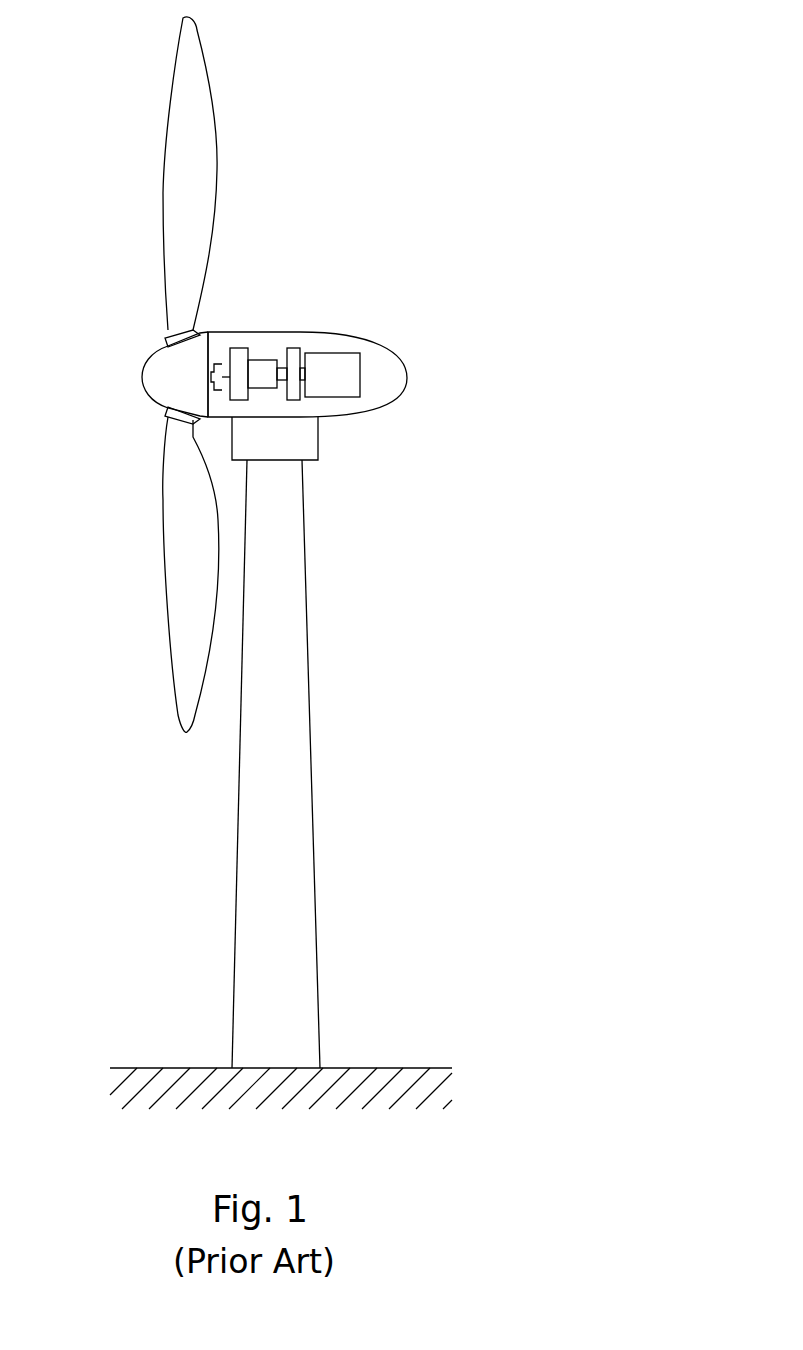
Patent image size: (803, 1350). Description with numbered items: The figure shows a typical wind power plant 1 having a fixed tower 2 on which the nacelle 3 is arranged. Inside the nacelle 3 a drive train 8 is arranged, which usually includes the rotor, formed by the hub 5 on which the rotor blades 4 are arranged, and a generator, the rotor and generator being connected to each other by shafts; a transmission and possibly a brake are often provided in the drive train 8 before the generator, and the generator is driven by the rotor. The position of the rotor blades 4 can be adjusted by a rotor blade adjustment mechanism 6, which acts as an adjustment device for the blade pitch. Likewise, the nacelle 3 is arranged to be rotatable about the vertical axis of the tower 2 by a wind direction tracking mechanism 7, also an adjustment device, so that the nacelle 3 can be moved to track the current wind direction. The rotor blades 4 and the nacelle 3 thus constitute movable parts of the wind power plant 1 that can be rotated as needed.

The wind power plant 1 is at (445, 268).
The tower 2 is at (282, 940).
The nacelle 3 is at (407, 378).
The rotor blades 4 is at (193, 208).
The hub 5 is at (188, 372).
The rotor blade adjustment mechanism 6 is at (165, 337).
The wind direction tracking mechanism 7 is at (320, 440).
The drive train 8 is at (265, 359).